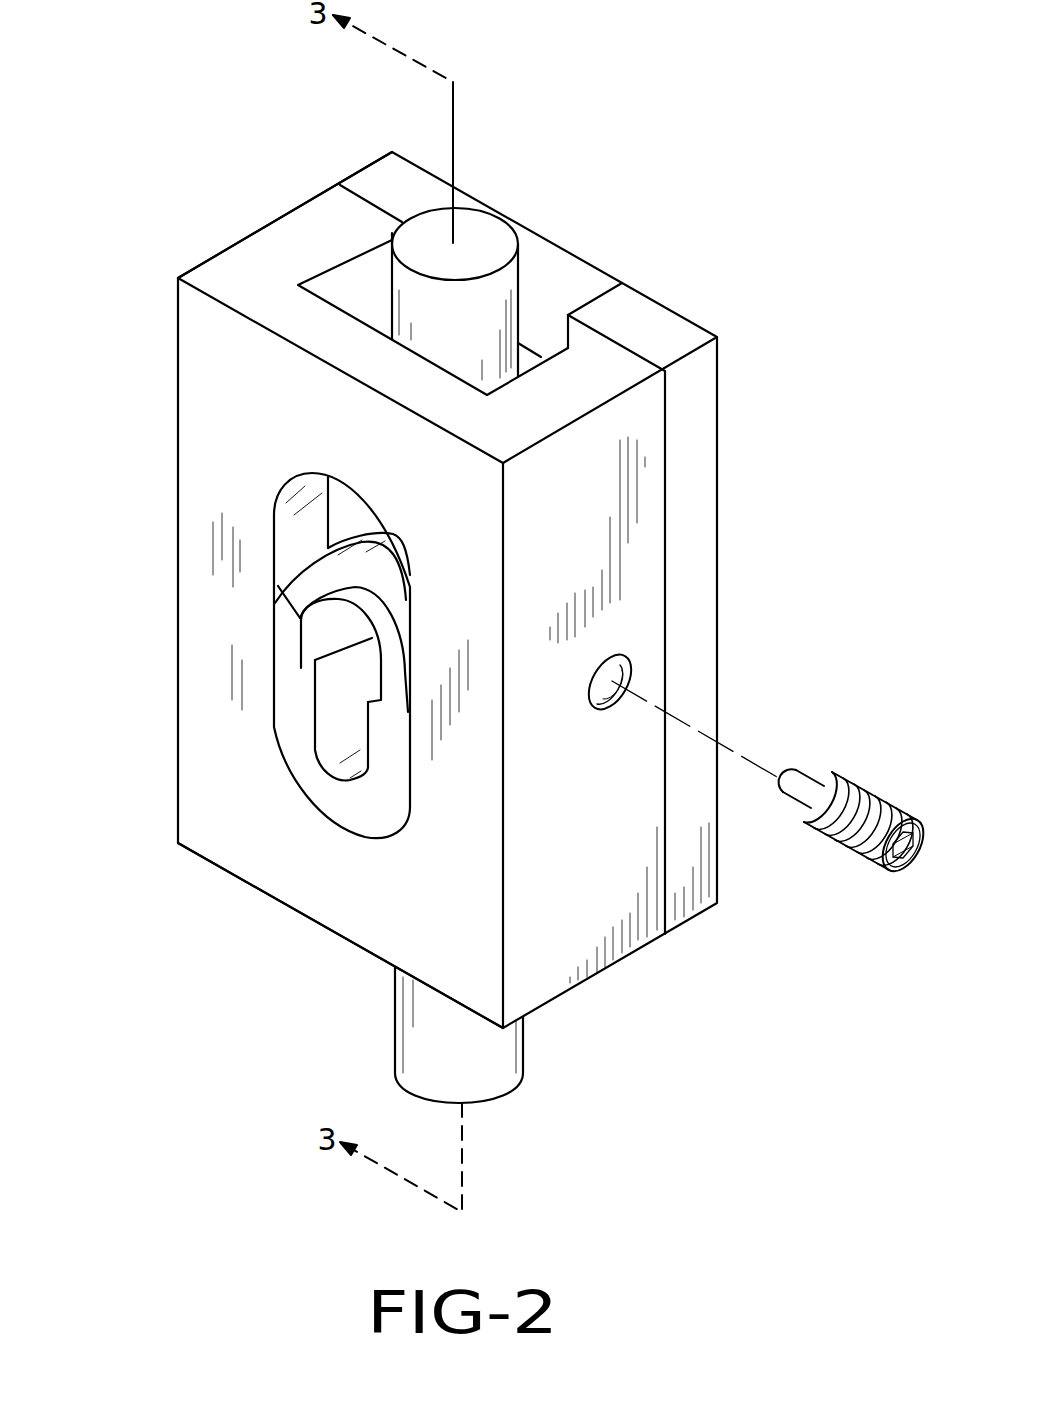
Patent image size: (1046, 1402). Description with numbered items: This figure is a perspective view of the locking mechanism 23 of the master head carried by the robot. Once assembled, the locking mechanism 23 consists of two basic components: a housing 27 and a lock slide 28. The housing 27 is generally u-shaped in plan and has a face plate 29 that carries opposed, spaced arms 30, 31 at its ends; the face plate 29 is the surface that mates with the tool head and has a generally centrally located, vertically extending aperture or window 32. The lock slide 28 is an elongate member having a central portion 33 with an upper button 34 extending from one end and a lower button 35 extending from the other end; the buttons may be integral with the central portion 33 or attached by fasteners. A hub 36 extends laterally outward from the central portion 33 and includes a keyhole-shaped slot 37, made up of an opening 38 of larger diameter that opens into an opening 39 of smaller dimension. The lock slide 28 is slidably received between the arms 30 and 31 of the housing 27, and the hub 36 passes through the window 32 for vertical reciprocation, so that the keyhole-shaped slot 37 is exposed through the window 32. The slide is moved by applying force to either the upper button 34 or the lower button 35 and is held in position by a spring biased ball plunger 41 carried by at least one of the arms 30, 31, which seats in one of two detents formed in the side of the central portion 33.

The locking mechanism 23 is at (722, 278).
The housing 27 is at (737, 374).
The lock slide 28 is at (531, 217).
The face plate 29 is at (260, 853).
The arm 30 is at (328, 228).
The arm 31 is at (570, 395).
The window 32 is at (293, 510).
The central portion 33 is at (533, 360).
The upper button 34 is at (498, 236).
The lower button 35 is at (488, 1072).
The hub 36 is at (377, 580).
The keyhole-shaped slot 37 is at (300, 723).
The opening 38 is at (300, 620).
The opening 39 is at (368, 707).
The spring biased ball plunger 41 is at (790, 785).